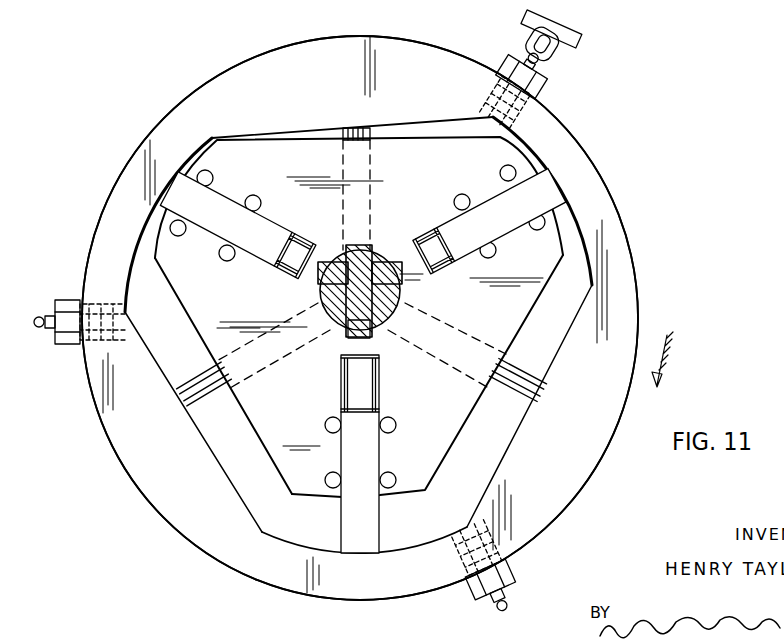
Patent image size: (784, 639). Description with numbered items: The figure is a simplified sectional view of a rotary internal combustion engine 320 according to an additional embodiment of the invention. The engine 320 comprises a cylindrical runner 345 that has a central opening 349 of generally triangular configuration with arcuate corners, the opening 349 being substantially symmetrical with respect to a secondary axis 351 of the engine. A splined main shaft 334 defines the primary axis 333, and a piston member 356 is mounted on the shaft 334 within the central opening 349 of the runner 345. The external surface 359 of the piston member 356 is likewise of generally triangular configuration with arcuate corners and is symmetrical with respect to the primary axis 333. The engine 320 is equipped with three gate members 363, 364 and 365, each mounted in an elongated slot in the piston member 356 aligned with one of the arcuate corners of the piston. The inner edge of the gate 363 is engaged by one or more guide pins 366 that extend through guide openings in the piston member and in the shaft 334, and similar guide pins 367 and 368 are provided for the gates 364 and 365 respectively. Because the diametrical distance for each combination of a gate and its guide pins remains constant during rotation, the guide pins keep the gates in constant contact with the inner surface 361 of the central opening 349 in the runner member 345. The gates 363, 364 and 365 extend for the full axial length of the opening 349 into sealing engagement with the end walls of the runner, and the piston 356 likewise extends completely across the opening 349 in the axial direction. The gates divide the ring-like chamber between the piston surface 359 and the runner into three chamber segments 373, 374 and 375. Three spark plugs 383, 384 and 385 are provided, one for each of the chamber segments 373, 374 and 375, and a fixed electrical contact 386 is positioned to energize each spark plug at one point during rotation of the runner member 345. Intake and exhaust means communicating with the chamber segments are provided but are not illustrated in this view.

The rotary internal combustion engine 320 is at (612, 187).
The primary axis 333 is at (362, 292).
The main shaft 334 is at (382, 240).
The cylindrical runner 345 is at (570, 145).
The central opening 349 is at (480, 468).
The secondary axis 351 is at (367, 342).
The piston member 356 is at (418, 168).
The external surface 359 is at (443, 457).
The inner surface 361 is at (520, 432).
The gate member 363 is at (220, 213).
The gate member 364 is at (500, 220).
The gate member 365 is at (352, 558).
The guide pins 366 is at (533, 377).
The guide pins 367 is at (197, 393).
The guide pins 368 is at (358, 128).
The chamber segment 373 is at (455, 125).
The chamber segment 374 is at (570, 302).
The chamber segment 375 is at (260, 493).
The spark plug 383 is at (538, 82).
The spark plug 384 is at (512, 572).
The spark plug 385 is at (77, 343).
The fixed electrical contact 386 is at (518, 36).